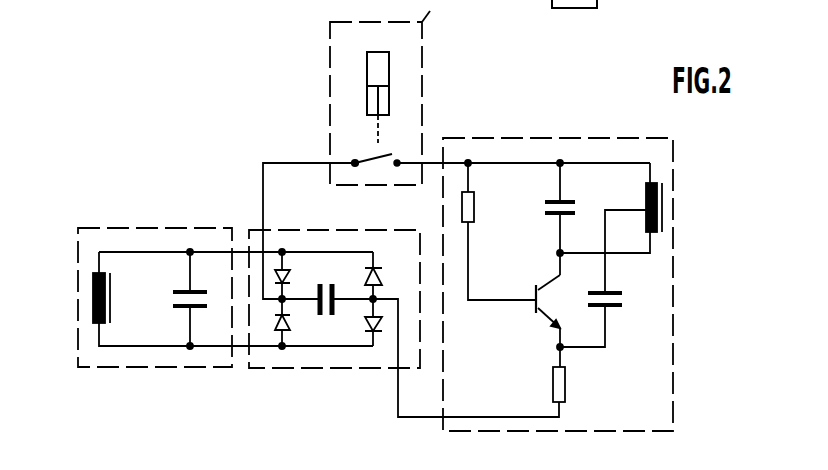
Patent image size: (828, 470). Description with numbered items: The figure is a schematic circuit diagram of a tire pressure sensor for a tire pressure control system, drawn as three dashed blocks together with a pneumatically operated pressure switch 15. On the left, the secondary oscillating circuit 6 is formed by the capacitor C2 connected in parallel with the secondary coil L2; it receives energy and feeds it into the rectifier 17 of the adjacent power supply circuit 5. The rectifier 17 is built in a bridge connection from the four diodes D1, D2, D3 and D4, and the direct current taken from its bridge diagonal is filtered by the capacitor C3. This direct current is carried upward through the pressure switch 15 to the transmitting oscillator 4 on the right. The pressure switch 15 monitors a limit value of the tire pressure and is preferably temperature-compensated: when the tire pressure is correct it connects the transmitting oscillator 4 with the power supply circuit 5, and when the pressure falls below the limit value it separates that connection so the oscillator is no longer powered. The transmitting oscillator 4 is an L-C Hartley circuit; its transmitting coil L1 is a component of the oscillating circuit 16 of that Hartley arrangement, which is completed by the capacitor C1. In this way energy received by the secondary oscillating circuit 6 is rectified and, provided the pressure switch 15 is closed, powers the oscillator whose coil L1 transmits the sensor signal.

The pressure switch 15 is at (422, 66).
The transmitting oscillator 4 is at (488, 138).
The oscillating circuit 16 is at (600, 158).
The secondary oscillating circuit 6 is at (158, 374).
The power supply circuit 5 is at (311, 377).
The rectifier 17 is at (345, 351).
The capacitor C1 is at (560, 196).
The transmitting coil L1 is at (646, 198).
The secondary coil L2 is at (93, 282).
The capacitor C2 is at (190, 290).
The diode D1 is at (289, 276).
The diode D2 is at (290, 320).
The diode D3 is at (378, 268).
The diode D4 is at (385, 322).
The capacitor C3 is at (340, 292).